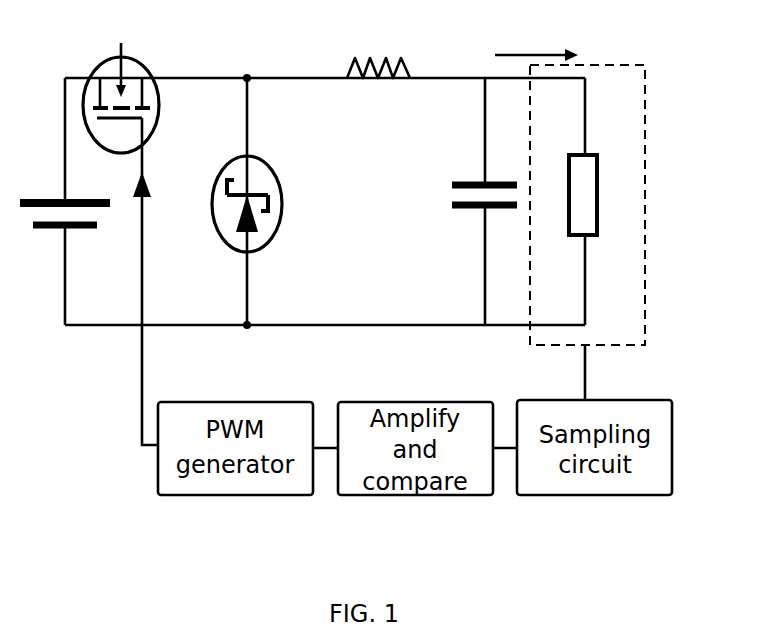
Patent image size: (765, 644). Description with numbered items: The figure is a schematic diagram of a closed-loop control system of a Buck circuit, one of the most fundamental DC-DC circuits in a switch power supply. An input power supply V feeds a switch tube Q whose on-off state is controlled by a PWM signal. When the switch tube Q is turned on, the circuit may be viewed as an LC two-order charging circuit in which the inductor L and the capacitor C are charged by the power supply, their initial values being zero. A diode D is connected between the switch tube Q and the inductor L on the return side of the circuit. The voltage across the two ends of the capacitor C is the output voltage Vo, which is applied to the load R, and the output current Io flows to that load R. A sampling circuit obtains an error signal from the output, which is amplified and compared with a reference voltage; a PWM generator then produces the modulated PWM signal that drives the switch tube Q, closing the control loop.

The switch tube Q is at (121, 76).
The diode D is at (261, 201).
The inductor L is at (378, 53).
The capacitor C is at (467, 201).
The load R is at (568, 195).
The input voltage source V is at (73, 215).
The output current Io is at (536, 40).
The output voltage Vo is at (587, 205).